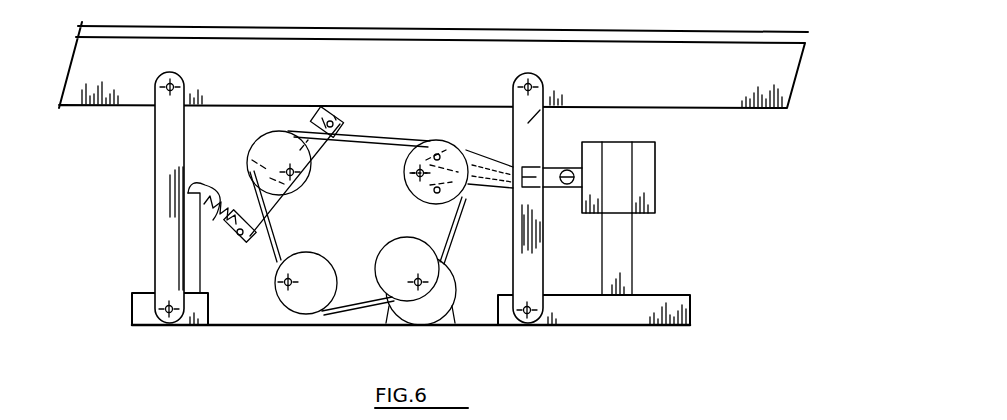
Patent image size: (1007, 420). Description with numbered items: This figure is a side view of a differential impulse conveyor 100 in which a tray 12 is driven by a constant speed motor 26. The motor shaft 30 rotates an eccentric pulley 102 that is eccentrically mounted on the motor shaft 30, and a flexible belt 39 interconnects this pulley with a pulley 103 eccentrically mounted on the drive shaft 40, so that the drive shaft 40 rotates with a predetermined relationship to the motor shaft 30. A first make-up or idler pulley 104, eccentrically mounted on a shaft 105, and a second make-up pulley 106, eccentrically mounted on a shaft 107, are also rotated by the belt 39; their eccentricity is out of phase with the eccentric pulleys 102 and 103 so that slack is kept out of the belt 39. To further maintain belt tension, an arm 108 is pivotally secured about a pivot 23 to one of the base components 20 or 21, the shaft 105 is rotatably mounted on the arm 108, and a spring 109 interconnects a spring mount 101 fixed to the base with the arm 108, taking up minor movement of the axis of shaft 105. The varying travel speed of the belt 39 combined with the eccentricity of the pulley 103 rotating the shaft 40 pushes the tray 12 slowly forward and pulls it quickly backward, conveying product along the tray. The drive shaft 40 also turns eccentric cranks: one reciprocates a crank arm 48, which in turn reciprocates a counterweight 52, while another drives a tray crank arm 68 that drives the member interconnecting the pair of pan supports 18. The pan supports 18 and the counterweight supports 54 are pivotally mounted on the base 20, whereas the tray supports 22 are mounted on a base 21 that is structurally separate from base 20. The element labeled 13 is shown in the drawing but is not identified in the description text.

The tray 12 is at (777, 68).
The support arm 13 is at (528, 268).
The pan supports 18 is at (567, 92).
The base 20 is at (500, 327).
The base 21 is at (143, 297).
The tray supports 22 is at (172, 157).
The pivot 23 is at (340, 120).
The constant speed motor 26 is at (463, 287).
The motor shaft 30 is at (417, 282).
The flexible belt 39 is at (443, 230).
The drive shaft 40 is at (402, 175).
The crank arm 48 is at (542, 227).
The counterweight 52 is at (658, 177).
The counterweight supports 54 is at (620, 255).
The tray crank arm 68 is at (510, 163).
The differential impulse conveyor 100 is at (356, 335).
The spring mount 101 is at (172, 225).
The eccentric pulley 102 is at (408, 247).
The pulley 103 is at (408, 150).
The first make-up pulley 104 is at (247, 158).
The shaft 105 is at (290, 170).
The second make-up pulley 106 is at (292, 322).
The shaft 107 is at (268, 267).
The arm 108 is at (268, 206).
The spring 109 is at (155, 197).